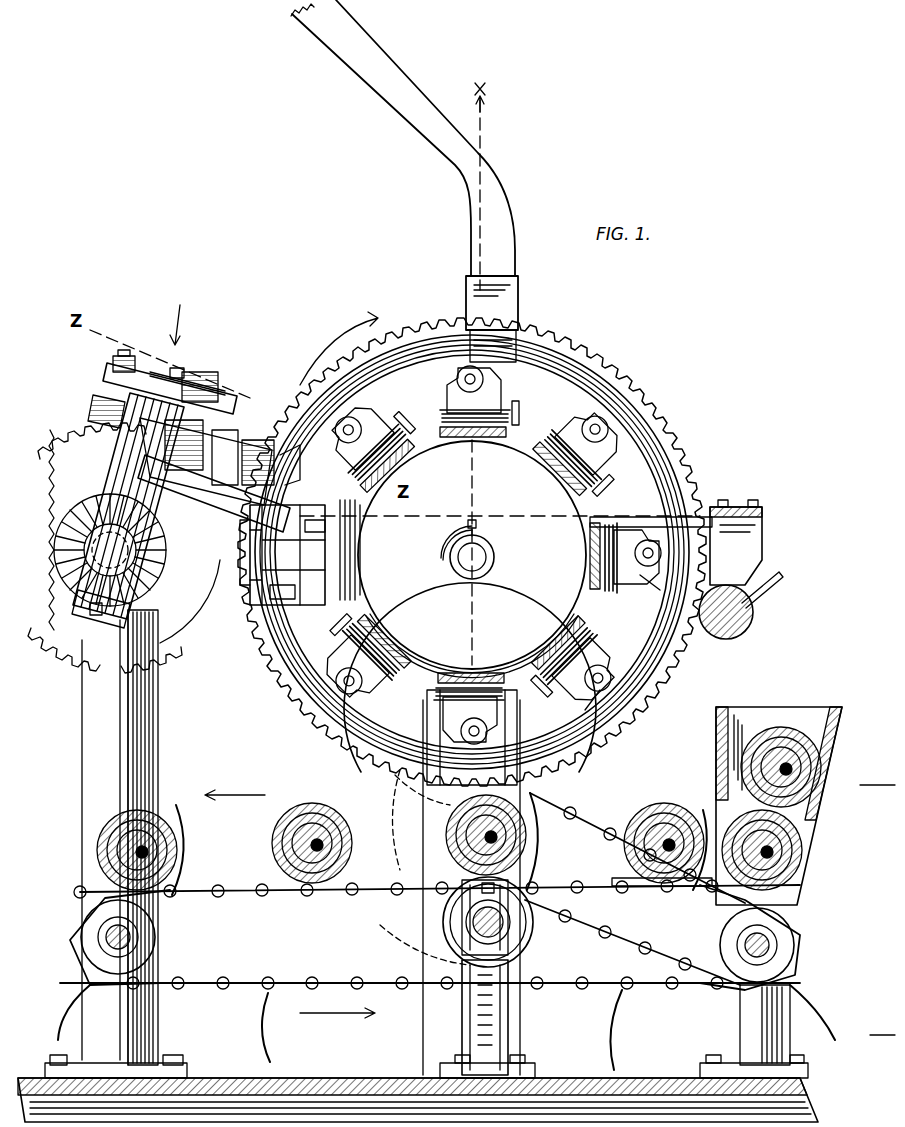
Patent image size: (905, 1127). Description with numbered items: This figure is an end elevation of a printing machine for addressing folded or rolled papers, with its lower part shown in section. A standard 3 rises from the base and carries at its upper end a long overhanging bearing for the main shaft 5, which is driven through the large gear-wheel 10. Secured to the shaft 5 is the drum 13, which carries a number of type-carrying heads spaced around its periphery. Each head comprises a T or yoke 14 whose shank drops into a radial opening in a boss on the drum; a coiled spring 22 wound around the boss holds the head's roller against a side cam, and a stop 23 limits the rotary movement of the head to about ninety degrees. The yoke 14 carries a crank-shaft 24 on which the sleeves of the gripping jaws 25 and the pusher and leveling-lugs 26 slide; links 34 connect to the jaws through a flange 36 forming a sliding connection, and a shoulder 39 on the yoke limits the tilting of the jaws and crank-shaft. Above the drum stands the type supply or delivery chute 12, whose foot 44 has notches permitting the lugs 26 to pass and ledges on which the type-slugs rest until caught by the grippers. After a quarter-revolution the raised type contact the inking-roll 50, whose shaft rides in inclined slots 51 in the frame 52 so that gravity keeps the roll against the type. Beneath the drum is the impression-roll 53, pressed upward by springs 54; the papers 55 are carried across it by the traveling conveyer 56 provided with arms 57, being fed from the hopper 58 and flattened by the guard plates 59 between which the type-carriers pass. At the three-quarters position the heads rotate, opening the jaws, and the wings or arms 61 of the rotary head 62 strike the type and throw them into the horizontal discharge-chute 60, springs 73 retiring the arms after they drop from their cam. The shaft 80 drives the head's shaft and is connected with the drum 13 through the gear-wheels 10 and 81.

The standard 3 is at (512, 1020).
The main shaft 5 is at (455, 566).
The large gear-wheel 10 is at (300, 690).
The delivery-chute 12 is at (408, 76).
The drum 13 is at (472, 559).
The T or yoke 14 is at (600, 640).
The coiled spring 22 is at (590, 645).
The stop 23 is at (520, 705).
The crank-shaft 24 is at (310, 590).
The jaws or grippers 25 is at (225, 650).
The pusher and leveling-lugs 26 is at (250, 548).
The links 34 is at (380, 552).
The flange 36 is at (621, 652).
The shoulder 39 is at (638, 518).
The foot of the delivery-chute 44 is at (520, 325).
The inking-roll 50 is at (755, 625).
The inclined slots 51 is at (785, 590).
The frame 52 is at (765, 540).
The impression-roll 53 is at (515, 945).
The springs 54 is at (440, 965).
The folded or rolled papers 55 is at (785, 725).
The traveling platen or conveyer 56 is at (630, 886).
The arms 57 is at (626, 1038).
The hopper 58 is at (732, 708).
The guard plates 59 is at (430, 792).
The discharge-chute 60 is at (302, 482).
The wings or arms 61 is at (105, 375).
The rotary head 62 is at (113, 364).
The springs 73 is at (93, 408).
The shaft 80 is at (150, 565).
The gear-wheel 81 is at (178, 660).